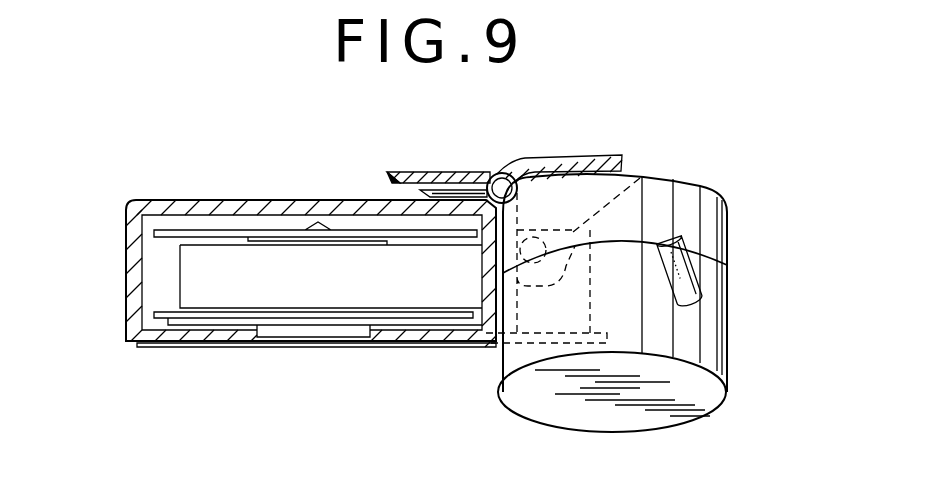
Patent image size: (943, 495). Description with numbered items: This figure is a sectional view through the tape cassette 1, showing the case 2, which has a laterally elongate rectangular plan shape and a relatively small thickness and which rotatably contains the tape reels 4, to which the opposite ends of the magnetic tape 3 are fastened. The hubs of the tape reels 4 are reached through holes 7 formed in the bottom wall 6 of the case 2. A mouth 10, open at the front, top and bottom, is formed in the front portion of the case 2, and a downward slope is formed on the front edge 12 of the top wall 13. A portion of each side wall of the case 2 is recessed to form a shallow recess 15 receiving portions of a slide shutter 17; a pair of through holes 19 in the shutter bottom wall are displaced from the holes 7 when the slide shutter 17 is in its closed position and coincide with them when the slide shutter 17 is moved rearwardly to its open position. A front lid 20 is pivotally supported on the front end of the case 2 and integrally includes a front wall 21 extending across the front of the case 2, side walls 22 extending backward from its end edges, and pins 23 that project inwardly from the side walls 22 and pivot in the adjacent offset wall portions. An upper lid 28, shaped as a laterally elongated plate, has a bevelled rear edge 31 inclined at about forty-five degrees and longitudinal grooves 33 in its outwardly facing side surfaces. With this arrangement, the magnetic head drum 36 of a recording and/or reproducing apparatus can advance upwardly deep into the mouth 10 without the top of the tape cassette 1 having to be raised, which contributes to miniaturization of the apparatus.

The tape cassette 1 is at (185, 200).
The case 2 is at (205, 200).
The tape reels 4 is at (243, 231).
The top wall 13 is at (302, 200).
The rear edge 31 is at (388, 178).
The longitudinal grooves 33 is at (428, 172).
The upper lid 28 is at (483, 172).
The front edge 12 is at (502, 172).
The front wall 21 is at (546, 163).
The front lid 20 is at (600, 157).
The side walls 22 is at (640, 178).
The magnetic head drum 36 is at (695, 197).
The pins 23 is at (588, 272).
The mouth 10 is at (503, 312).
The bottom wall 6 is at (168, 318).
The slide shutter 17 is at (150, 349).
The shallow recess 15 is at (185, 349).
The holes 7 is at (262, 349).
The through holes 19 is at (378, 349).
The magnetic tape 3 is at (427, 323).